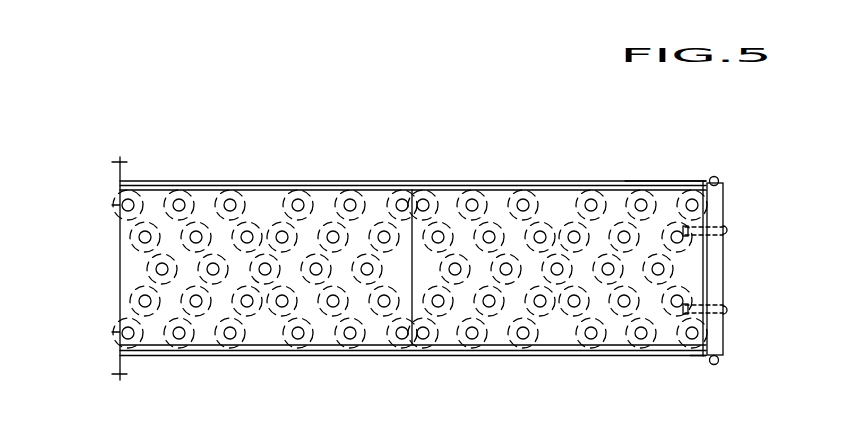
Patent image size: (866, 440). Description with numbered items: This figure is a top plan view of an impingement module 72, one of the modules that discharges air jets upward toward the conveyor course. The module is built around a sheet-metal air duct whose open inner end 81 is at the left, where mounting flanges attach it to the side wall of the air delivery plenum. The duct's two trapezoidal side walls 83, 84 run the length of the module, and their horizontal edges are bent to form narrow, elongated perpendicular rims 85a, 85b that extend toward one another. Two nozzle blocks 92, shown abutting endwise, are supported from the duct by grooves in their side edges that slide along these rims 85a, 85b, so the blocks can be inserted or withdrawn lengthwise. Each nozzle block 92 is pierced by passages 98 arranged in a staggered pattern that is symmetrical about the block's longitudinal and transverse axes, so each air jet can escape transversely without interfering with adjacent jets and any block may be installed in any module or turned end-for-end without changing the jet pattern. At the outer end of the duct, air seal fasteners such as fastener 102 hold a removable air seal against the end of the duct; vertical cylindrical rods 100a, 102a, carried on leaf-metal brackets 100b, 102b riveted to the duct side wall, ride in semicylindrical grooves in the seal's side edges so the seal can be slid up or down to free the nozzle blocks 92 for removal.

The module 72 is at (766, 272).
The inner end 81 is at (118, 265).
The side wall 83 is at (560, 357).
The side wall 84 is at (573, 182).
The rim 85a is at (487, 345).
The rim 85b is at (213, 188).
The nozzle block 92 is at (378, 205).
The passage 98 is at (680, 295).
The fastening cylindrical rod 100a is at (723, 360).
The leaf metal bracket 100b is at (694, 360).
The air seal fastener 102 is at (689, 180).
The fastening cylindrical rod 102a is at (718, 177).
The leaf metal bracket 102b is at (635, 185).